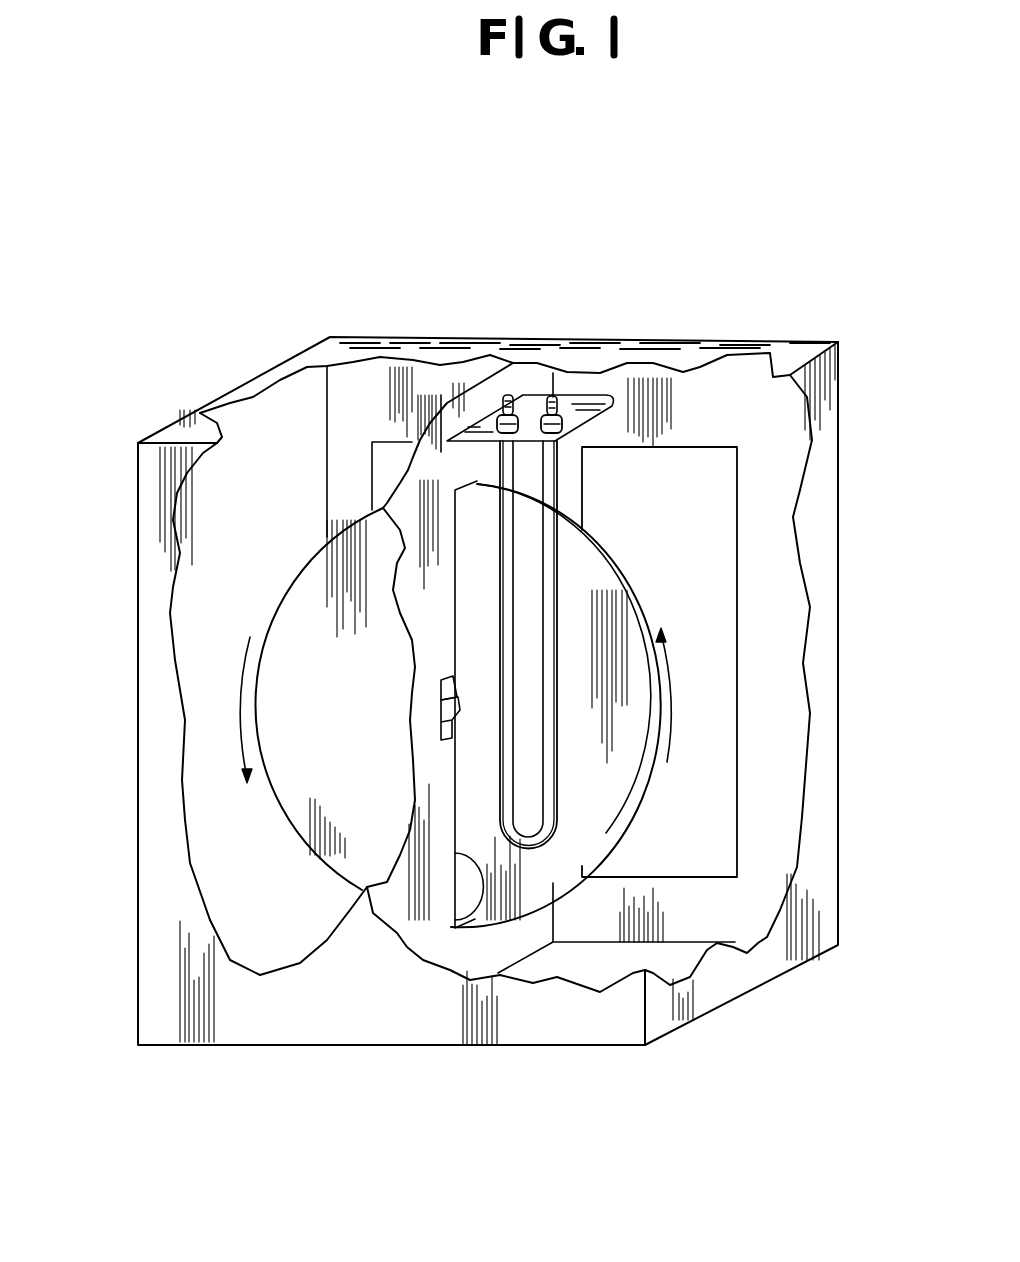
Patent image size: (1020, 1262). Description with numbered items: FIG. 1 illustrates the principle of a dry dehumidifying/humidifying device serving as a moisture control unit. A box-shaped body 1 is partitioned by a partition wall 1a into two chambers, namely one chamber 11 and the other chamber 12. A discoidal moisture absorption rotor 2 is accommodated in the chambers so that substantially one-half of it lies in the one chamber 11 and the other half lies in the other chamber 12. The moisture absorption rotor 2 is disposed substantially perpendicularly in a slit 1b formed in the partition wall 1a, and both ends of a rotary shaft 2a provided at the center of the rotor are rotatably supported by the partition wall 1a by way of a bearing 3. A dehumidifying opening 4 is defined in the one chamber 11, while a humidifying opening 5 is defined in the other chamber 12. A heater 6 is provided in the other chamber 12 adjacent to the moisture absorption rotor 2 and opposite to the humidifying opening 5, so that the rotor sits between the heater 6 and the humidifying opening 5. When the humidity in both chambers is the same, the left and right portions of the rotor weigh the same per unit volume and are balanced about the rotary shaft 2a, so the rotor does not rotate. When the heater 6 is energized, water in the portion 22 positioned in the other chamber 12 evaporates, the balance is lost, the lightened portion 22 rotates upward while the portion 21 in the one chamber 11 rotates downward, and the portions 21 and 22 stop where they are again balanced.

The box-shaped body 1 is at (315, 1028).
The one chamber 11 is at (205, 572).
The other chamber 12 is at (738, 910).
The partition wall 1a is at (458, 392).
The slit 1b is at (482, 880).
The moisture absorption rotor 2 is at (642, 788).
The portion of the moisture absorption rotor in one chamber 21 is at (293, 635).
The portion of the moisture absorption rotor in the other chamber 22 is at (637, 690).
The rotary shaft 2a is at (450, 718).
The bearing 3 is at (442, 688).
The dehumidifying opening 4 is at (390, 453).
The humidifying opening 5 is at (722, 500).
The heater 6 is at (558, 584).